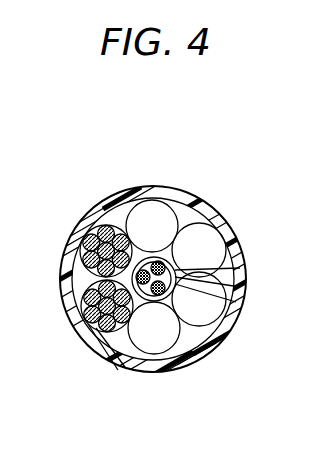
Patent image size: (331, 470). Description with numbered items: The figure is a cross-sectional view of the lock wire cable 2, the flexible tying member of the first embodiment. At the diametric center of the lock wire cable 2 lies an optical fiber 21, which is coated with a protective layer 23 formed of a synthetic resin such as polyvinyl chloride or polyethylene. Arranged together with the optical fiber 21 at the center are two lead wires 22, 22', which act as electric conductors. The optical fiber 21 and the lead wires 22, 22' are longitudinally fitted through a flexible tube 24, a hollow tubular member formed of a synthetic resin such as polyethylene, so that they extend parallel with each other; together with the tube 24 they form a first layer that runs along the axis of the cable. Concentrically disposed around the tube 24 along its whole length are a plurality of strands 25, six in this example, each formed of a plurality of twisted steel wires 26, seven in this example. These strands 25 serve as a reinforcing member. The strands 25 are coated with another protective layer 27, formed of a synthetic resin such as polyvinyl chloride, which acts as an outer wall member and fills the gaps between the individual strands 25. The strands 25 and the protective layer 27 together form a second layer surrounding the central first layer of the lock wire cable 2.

The lock wire cable 2 is at (163, 178).
The optical fiber 21 is at (128, 345).
The lead wire 22 is at (237, 272).
The lead wire 22' is at (236, 300).
The protective layer 23 is at (148, 348).
The flexible tube 24 is at (222, 312).
The strand 25 is at (108, 224).
The twisted steel wire 26 is at (81, 250).
The protective layer 27 is at (202, 346).